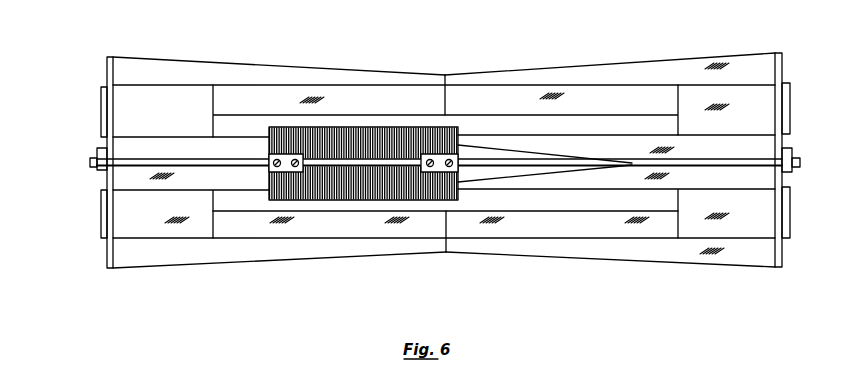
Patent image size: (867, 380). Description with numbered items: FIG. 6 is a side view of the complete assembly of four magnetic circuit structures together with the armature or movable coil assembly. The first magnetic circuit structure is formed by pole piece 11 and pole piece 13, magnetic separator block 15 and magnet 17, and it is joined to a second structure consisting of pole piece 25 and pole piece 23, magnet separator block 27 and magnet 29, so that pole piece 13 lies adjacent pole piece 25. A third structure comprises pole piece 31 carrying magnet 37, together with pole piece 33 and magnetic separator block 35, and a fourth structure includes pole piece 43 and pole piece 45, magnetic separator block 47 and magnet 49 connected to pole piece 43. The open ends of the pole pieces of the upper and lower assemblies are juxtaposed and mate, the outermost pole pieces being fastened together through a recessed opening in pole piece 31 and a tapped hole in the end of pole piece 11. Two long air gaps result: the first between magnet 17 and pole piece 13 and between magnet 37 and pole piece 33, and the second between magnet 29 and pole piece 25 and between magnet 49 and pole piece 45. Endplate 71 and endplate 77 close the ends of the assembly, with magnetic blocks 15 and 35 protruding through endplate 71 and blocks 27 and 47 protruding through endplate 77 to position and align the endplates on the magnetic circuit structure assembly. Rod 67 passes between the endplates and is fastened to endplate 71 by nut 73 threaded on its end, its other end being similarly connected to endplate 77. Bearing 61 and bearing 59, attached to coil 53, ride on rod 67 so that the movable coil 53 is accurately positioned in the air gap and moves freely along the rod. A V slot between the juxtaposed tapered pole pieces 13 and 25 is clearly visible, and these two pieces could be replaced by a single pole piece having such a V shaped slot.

The pole piece 11 is at (735, 53).
The pole piece 13 is at (530, 140).
The magnetic separator block 15 is at (790, 110).
The magnet 17 is at (578, 102).
The pole piece 23 is at (630, 262).
The pole piece 25 is at (583, 180).
The magnet separator block 27 is at (790, 212).
The magnet 29 is at (525, 220).
The pole piece 31 is at (155, 57).
The pole piece 33 is at (208, 145).
The magnetic separator block 35 is at (101, 110).
The magnet 37 is at (272, 100).
The pole piece 43 is at (172, 258).
The pole piece 45 is at (207, 178).
The magnetic separator block 47 is at (102, 228).
The magnet 49 is at (345, 228).
The movable coil 53 is at (372, 143).
The bearing 59 is at (458, 172).
The bearing 61 is at (290, 172).
The rod 67 is at (90, 163).
The endplate 71 is at (106, 72).
The nut 73 is at (93, 175).
The endplate 77 is at (782, 72).